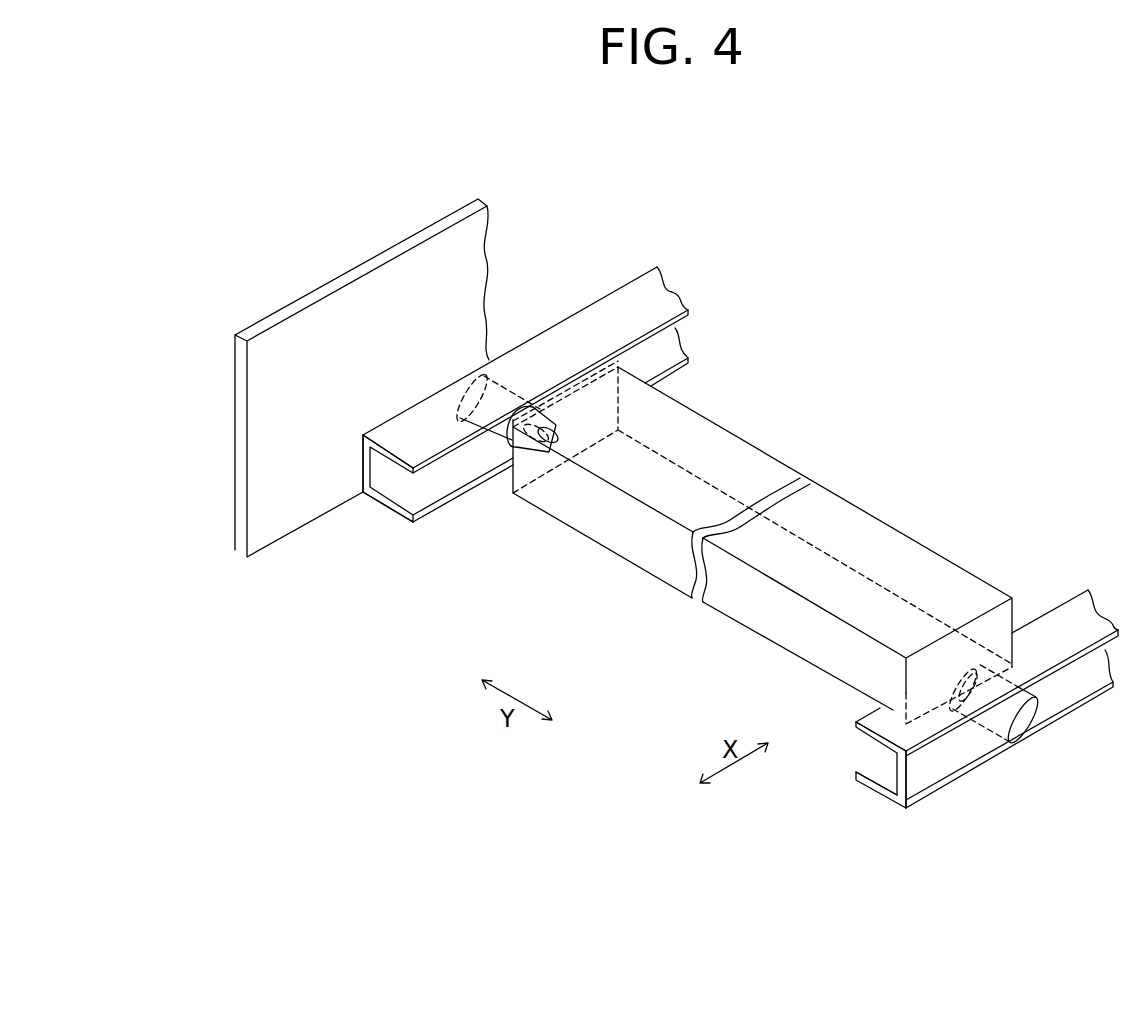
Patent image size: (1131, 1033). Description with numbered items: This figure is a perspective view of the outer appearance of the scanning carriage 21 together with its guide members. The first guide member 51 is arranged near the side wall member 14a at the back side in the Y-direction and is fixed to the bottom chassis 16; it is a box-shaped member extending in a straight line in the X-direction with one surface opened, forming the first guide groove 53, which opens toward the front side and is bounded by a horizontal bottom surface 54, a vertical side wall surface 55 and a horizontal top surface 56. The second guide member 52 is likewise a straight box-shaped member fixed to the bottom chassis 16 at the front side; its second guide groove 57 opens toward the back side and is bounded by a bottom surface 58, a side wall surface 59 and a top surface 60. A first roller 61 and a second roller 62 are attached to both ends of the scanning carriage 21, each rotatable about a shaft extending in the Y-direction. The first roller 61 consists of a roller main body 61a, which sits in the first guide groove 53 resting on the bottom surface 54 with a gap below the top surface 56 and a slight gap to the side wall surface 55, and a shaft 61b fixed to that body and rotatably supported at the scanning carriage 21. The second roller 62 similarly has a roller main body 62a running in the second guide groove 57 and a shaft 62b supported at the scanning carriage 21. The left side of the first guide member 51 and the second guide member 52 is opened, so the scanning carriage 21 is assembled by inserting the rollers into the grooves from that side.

The side wall member 14a is at (345, 306).
The first guide member 51 is at (627, 256).
The second guide member 52 is at (1076, 565).
The first guide groove 53 is at (444, 480).
The bottom surface 54 is at (410, 497).
The side wall surface 55 is at (378, 476).
The top surface 56 is at (393, 467).
The second guide groove 57 is at (837, 753).
The bottom surface 58 is at (880, 777).
The side wall surface 59 is at (895, 790).
The top surface 60 is at (868, 742).
The first roller 61 is at (497, 434).
The roller main body 61a is at (500, 388).
The shaft 61b is at (547, 380).
The second roller 62 is at (1047, 717).
The roller main body 62a is at (1007, 660).
The shaft 62b is at (963, 655).
The scanning carriage 21 is at (843, 467).
The bottom chassis 16 is at (533, 648).